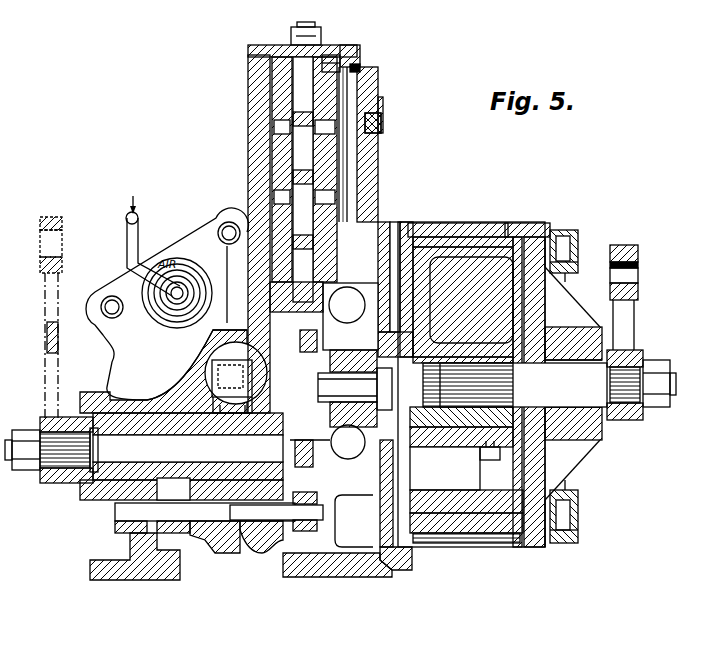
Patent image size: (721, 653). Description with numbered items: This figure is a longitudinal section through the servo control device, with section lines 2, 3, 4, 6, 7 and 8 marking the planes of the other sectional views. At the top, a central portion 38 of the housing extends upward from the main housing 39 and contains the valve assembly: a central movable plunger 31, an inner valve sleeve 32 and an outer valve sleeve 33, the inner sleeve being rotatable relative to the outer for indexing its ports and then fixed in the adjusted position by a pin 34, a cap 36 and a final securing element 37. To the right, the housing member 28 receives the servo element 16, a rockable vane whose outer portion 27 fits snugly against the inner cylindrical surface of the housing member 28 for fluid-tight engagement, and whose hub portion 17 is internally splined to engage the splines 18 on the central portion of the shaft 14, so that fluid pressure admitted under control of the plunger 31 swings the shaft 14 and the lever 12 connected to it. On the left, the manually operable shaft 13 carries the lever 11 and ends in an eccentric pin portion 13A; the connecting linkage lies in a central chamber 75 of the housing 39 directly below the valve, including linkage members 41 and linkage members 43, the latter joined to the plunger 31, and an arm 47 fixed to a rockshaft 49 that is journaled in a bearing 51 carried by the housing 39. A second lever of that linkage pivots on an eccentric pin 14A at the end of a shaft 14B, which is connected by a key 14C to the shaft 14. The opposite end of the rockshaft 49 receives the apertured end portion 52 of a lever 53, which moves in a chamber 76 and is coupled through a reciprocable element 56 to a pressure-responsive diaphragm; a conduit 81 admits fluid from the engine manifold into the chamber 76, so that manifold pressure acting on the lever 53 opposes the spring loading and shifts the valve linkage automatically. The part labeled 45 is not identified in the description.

The section line 2 is at (248, 93).
The section line 3 is at (248, 126).
The section line 4 is at (248, 58).
The section line 6 is at (383, 222).
The section line 7 is at (225, 215).
The section line 8 is at (530, 225).
The lever 11 is at (50, 304).
The lever 12 is at (625, 340).
The shaft 13 is at (200, 460).
The pin portion 13A is at (345, 456).
The shaft 14 is at (520, 402).
The pin 14A is at (348, 442).
The shaft 14B is at (347, 387).
The key 14C is at (392, 390).
The servo element 16 is at (436, 300).
The hub portion 17 is at (446, 355).
The splines 18 is at (513, 388).
The outer portion 27 is at (462, 247).
The housing member 28 is at (433, 240).
The valve plunger 31 is at (292, 258).
The inner valve sleeve 32 is at (361, 70).
The outer valve sleeve 33 is at (349, 182).
The pin 34 is at (352, 62).
The cap 36 is at (332, 58).
The securing element 37 is at (304, 30).
The central portion 38 is at (250, 188).
The main housing 39 is at (333, 578).
The linkage members 41 is at (318, 495).
The linkage members 43 is at (318, 350).
The lower housing pocket 45 is at (345, 518).
The arm 47 is at (333, 500).
The rockshaft 49 is at (248, 545).
The bearing 51 is at (222, 525).
The apertured end portion 52 is at (140, 538).
The lever 53 is at (212, 408).
The reciprocable element 56 is at (244, 357).
The central chamber 75 is at (320, 560).
The chamber 76 is at (178, 545).
The conduit 81 is at (127, 231).